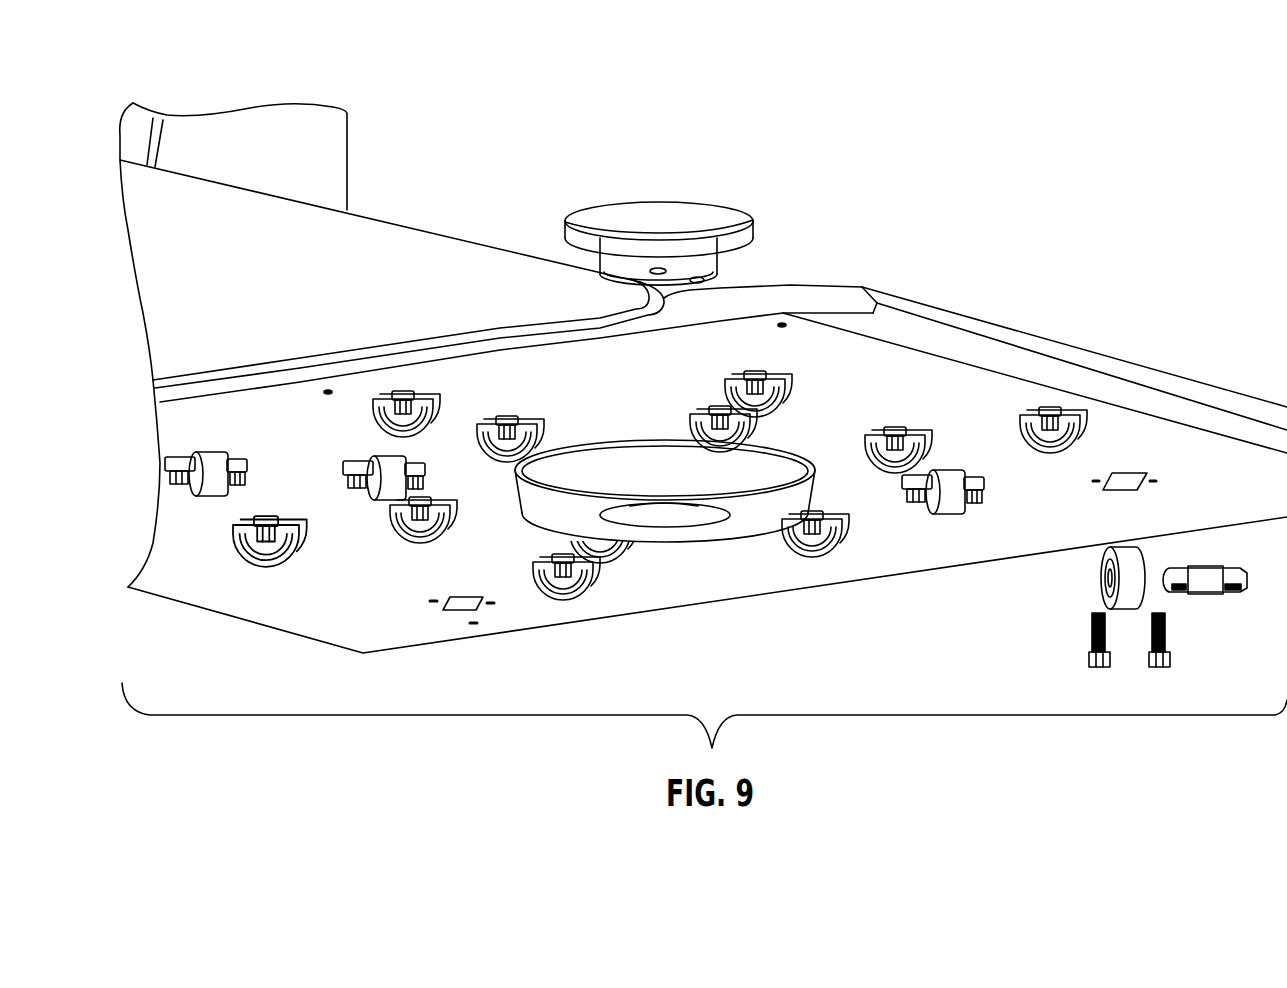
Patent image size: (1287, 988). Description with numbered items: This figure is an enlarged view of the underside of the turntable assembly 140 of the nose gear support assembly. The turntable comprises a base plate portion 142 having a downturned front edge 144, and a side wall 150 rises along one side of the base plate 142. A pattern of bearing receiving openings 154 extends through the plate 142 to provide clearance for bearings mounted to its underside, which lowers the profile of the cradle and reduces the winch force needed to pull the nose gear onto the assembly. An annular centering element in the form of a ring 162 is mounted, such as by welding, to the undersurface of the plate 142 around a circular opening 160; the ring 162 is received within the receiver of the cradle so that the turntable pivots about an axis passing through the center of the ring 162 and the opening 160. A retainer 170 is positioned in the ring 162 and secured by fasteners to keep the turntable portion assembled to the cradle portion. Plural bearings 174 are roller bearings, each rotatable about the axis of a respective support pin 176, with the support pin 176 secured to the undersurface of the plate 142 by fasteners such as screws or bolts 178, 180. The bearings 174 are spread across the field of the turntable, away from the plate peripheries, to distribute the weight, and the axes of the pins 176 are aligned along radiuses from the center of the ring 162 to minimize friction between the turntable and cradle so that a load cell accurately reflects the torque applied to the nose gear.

The turntable assembly 140 is at (1061, 276).
The base plate portion 142 is at (815, 300).
The downturned front edge 144 is at (1100, 362).
The side wall 150 is at (402, 240).
The bearing receiving opening 154 is at (1130, 481).
The circular opening 160 is at (667, 512).
The ring 162 is at (785, 475).
The retainer 170 is at (702, 212).
The bearings 174 is at (1038, 417).
The support pin 176 is at (1203, 575).
The bolt 178 is at (1168, 630).
The bolt 180 is at (1091, 660).